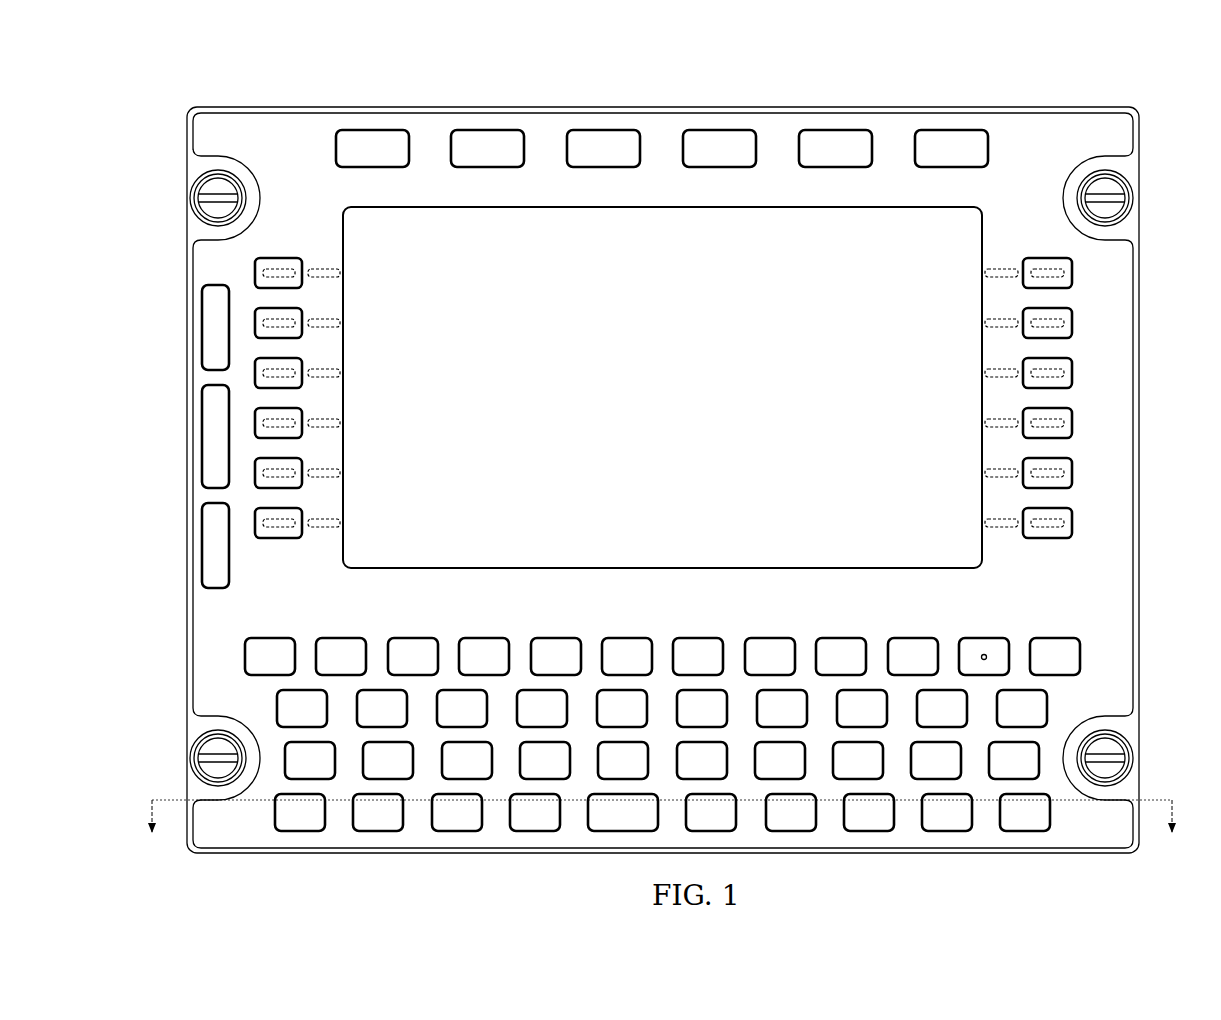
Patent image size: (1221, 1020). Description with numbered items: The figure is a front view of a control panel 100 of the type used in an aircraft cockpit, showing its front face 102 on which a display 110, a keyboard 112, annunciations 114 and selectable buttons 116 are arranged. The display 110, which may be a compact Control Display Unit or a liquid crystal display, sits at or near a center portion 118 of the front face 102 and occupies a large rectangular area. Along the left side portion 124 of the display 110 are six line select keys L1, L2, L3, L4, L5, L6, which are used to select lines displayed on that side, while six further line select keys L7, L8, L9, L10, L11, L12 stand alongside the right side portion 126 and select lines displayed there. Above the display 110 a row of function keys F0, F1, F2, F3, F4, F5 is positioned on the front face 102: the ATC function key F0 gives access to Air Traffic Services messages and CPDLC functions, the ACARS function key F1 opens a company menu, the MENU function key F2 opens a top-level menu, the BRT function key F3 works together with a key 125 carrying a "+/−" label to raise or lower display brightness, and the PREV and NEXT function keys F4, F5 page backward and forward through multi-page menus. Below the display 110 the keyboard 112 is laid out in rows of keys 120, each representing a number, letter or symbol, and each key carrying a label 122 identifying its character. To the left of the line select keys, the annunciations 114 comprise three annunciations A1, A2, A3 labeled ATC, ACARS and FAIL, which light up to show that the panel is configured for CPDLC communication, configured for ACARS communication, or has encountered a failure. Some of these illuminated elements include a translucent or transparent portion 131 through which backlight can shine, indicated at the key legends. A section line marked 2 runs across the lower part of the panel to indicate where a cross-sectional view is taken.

The control panel 100 is at (205, 94).
The front face 102 is at (1046, 140).
The display 110 is at (686, 390).
The keyboard 112 is at (733, 638).
The annunciations 114 is at (179, 394).
The selectable buttons 116 is at (710, 303).
The center portion 118 is at (768, 397).
The keys 120 is at (664, 745).
The label 122 is at (696, 745).
The left side portion 124 is at (343, 383).
The key 125 is at (1043, 638).
The right side portion 126 is at (982, 356).
The translucent or transparent portion 131 is at (437, 803).
The section line 2- 2 is at (661, 830).
The ATC function key F0 is at (372, 128).
The ACARS function key F1 is at (487, 128).
The MENU function key F2 is at (603, 128).
The BRT function key F3 is at (719, 128).
The PREV function key F4 is at (835, 128).
The NEXT function key F5 is at (951, 128).
The line select key L1 is at (302, 265).
The line select key L2 is at (302, 315).
The line select key L3 is at (302, 365).
The line select key L4 is at (302, 415).
The line select key L5 is at (302, 465).
The line select key L6 is at (302, 515).
The line select key L7 is at (1073, 271).
The line select key L8 is at (1073, 321).
The line select key L9 is at (1073, 371).
The line select key L10 is at (1073, 421).
The line select key L11 is at (1073, 471).
The line select key L12 is at (1073, 521).
The ATC annunciation A1 is at (202, 328).
The ACARS annunciation A2 is at (202, 438).
The FAIL annunciation A3 is at (202, 553).